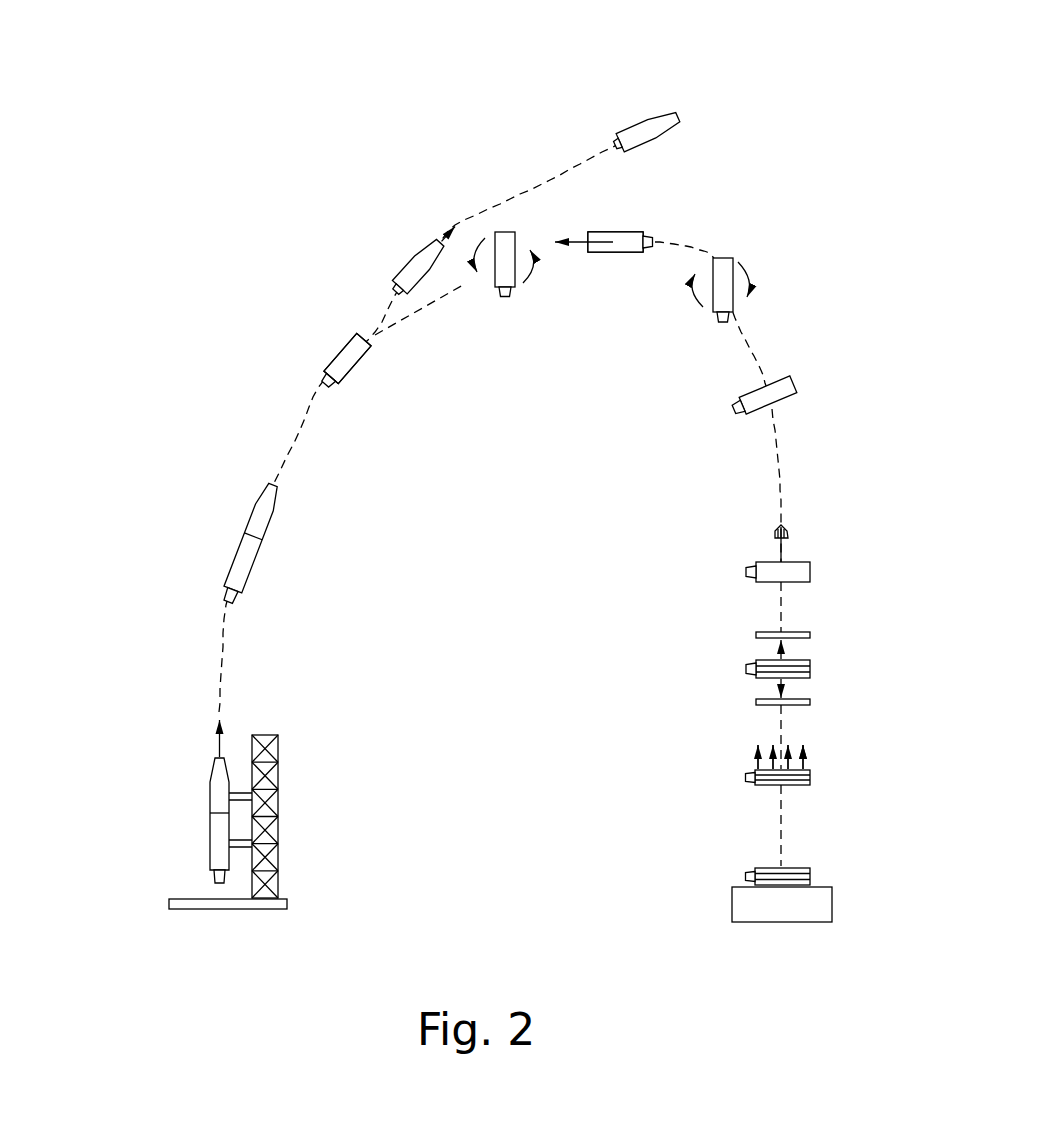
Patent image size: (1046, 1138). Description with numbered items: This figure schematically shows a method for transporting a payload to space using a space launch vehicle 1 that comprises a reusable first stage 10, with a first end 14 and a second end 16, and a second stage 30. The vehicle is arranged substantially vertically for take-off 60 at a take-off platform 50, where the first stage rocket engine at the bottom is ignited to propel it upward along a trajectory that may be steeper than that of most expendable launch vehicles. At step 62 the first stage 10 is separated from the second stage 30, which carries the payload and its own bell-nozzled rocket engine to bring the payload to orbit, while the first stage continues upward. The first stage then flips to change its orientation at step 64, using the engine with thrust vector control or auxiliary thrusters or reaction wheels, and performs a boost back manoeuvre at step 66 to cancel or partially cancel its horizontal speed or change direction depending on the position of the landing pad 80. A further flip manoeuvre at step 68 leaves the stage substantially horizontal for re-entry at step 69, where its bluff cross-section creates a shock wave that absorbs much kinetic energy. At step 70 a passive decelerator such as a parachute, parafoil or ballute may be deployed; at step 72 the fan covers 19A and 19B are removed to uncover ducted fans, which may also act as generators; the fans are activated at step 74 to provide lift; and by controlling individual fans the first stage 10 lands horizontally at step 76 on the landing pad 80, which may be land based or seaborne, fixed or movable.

The space launch vehicle 1 is at (210, 783).
The first stage 10 is at (340, 352).
The first end 14 is at (337, 392).
The second end 16 is at (378, 337).
The fan cover 19A is at (802, 628).
The fan cover 19B is at (800, 707).
The second stage 30 is at (398, 270).
The take-off platform 50 is at (283, 898).
The take-off 60 is at (172, 848).
The separation step 62 is at (392, 364).
The flip manoeuvre step 64 is at (507, 313).
The boost back manoeuvre step 66 is at (620, 259).
The further flip manoeuvre step 68 is at (752, 262).
The re-entry step 69 is at (805, 382).
The passive decelerator activation step 70 is at (813, 572).
The fan cover removal step 72 is at (812, 667).
The ducted fan activation step 74 is at (815, 775).
The landing step 76 is at (812, 877).
The landing pad 80 is at (832, 902).